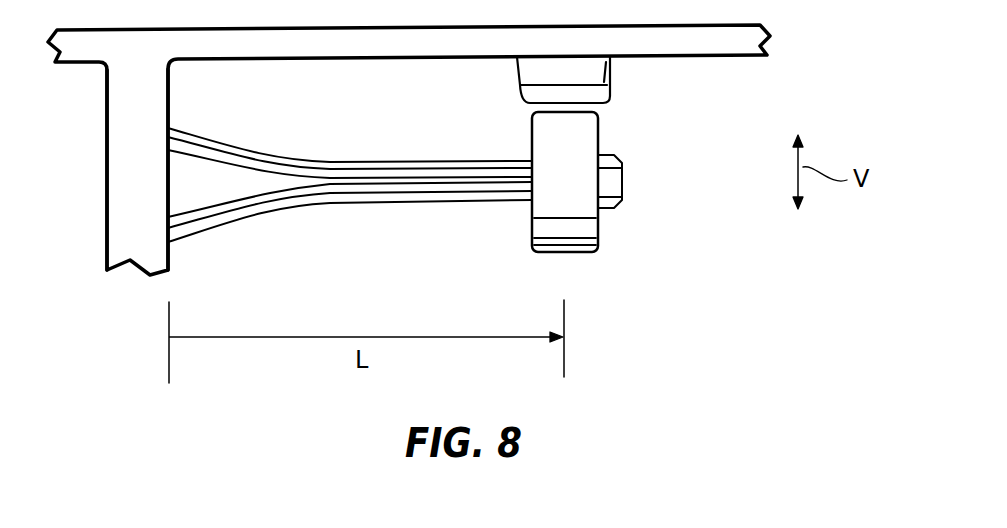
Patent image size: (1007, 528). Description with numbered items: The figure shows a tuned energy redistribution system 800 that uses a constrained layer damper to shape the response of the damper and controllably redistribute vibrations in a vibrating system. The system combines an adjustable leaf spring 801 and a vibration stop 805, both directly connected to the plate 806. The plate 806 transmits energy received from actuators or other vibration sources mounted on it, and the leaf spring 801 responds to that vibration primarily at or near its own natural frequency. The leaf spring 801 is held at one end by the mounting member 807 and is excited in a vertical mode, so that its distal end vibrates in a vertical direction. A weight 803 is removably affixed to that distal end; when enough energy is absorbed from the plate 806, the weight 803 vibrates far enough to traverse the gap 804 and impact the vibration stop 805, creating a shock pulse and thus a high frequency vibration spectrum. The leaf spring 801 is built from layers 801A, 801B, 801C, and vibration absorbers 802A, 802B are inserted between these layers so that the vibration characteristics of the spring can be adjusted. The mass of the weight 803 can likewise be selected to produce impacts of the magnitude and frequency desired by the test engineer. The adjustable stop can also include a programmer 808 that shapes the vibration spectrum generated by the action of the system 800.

The tuned energy redistribution system 800 is at (466, 168).
The adjustable leaf spring 801 is at (350, 181).
The layer of leaf spring 801A is at (327, 203).
The layer of leaf spring 801B is at (375, 182).
The layer of leaf spring 801C is at (337, 163).
The vibration absorber 802A is at (488, 193).
The vibration absorber 802B is at (498, 175).
The weight 803 is at (600, 230).
The gap 804 is at (625, 115).
The vibration stop 805 is at (610, 72).
The plate 806 is at (740, 57).
The mounting member 807 is at (168, 89).
The programmer 808 is at (606, 113).